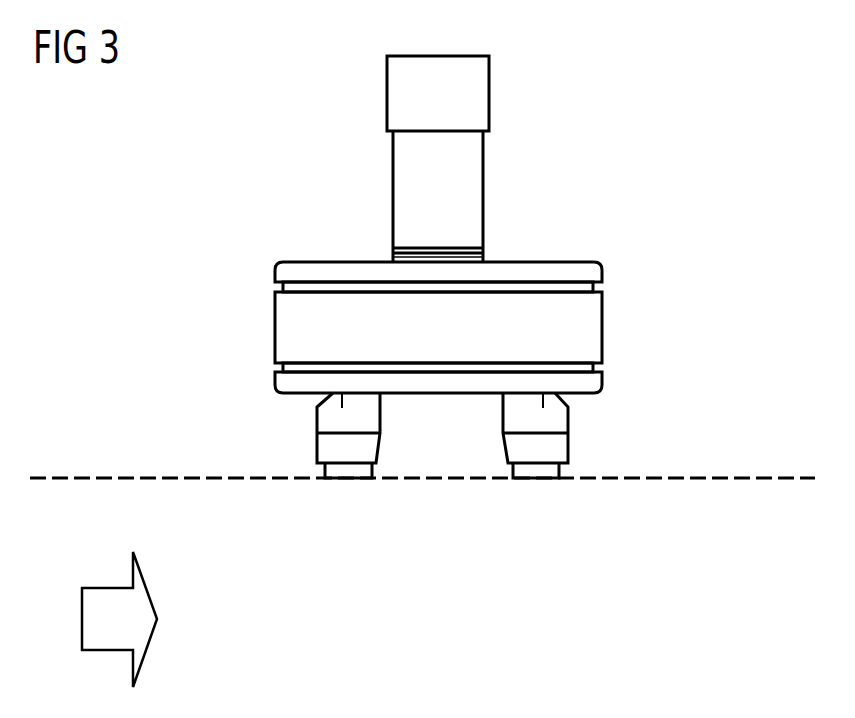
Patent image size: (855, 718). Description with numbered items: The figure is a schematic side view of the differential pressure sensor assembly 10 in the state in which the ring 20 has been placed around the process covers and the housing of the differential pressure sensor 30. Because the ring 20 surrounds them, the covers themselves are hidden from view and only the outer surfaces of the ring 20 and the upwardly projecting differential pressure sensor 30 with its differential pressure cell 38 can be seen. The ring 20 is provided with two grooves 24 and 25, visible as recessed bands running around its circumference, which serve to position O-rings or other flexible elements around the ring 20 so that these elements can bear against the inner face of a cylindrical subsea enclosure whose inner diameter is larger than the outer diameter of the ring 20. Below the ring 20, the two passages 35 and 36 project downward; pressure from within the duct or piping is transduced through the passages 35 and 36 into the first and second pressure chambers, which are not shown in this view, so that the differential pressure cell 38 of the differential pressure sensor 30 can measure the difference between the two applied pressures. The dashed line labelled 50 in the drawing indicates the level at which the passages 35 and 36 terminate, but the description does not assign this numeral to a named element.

The differential pressure sensor assembly 10 is at (243, 89).
The ring 20 is at (275, 273).
The groove 24 is at (593, 288).
The groove 25 is at (593, 368).
The differential pressure sensor 30 is at (530, 148).
The passage 35 is at (350, 482).
The passage 36 is at (538, 482).
The differential pressure cell 38 is at (393, 190).
The reference surface 50 is at (124, 478).